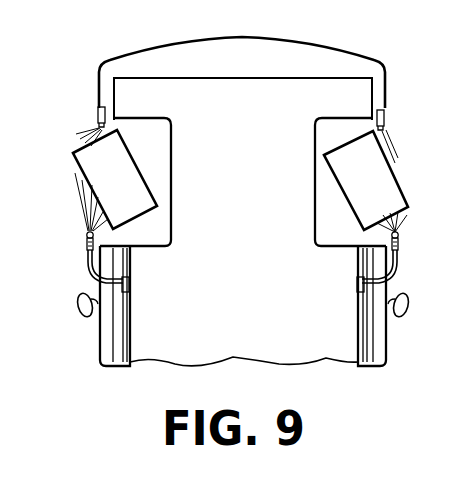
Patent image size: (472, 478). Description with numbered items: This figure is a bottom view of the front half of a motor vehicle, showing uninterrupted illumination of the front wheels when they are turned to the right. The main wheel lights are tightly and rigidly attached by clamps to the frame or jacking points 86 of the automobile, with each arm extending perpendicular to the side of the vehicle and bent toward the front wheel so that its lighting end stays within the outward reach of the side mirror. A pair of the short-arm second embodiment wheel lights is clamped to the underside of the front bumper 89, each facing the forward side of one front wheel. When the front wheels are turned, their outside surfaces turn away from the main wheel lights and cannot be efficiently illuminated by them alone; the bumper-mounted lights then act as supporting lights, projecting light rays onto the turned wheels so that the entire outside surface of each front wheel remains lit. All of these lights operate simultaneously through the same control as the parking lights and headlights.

The front bumper 89 is at (253, 52).
The frame or jacking points 86 is at (100, 342).